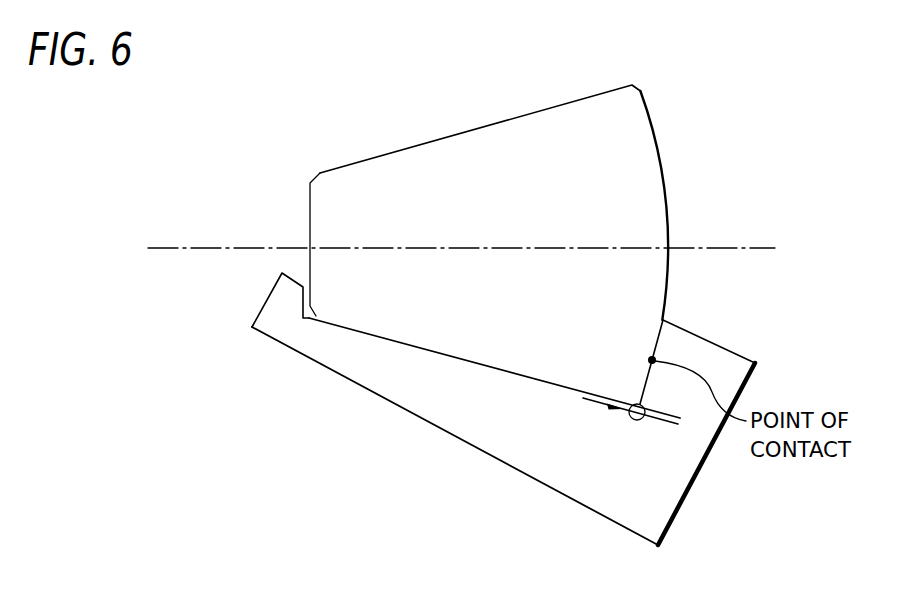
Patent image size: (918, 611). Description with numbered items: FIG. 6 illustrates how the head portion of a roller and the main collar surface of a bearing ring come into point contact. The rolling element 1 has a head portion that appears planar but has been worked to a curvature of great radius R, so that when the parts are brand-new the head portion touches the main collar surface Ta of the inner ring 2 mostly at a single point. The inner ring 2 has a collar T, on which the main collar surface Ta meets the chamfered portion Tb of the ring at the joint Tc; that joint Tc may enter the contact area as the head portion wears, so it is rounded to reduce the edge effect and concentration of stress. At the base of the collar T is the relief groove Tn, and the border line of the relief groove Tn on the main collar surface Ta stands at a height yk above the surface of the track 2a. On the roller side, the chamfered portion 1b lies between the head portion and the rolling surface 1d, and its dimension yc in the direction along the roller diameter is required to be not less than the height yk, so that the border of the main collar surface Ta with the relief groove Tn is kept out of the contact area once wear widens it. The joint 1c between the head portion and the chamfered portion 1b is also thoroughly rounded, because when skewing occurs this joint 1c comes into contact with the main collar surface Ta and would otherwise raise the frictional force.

The rolling element 1 is at (522, 334).
The chamfered portion 1b is at (635, 421).
The joint 1c is at (638, 405).
The rolling surface 1d is at (663, 173).
The inner ring 2 is at (536, 412).
The track 2a is at (447, 356).
The collar T is at (733, 362).
The main collar surface Ta is at (657, 343).
The chamfered portion Tb is at (666, 321).
The joint Tc is at (667, 321).
The relief groove Tn is at (627, 416).
The radius of curvature of head portion R is at (641, 90).
The height of border line yk is at (604, 366).
The dimension of chamfered portion yc is at (682, 393).